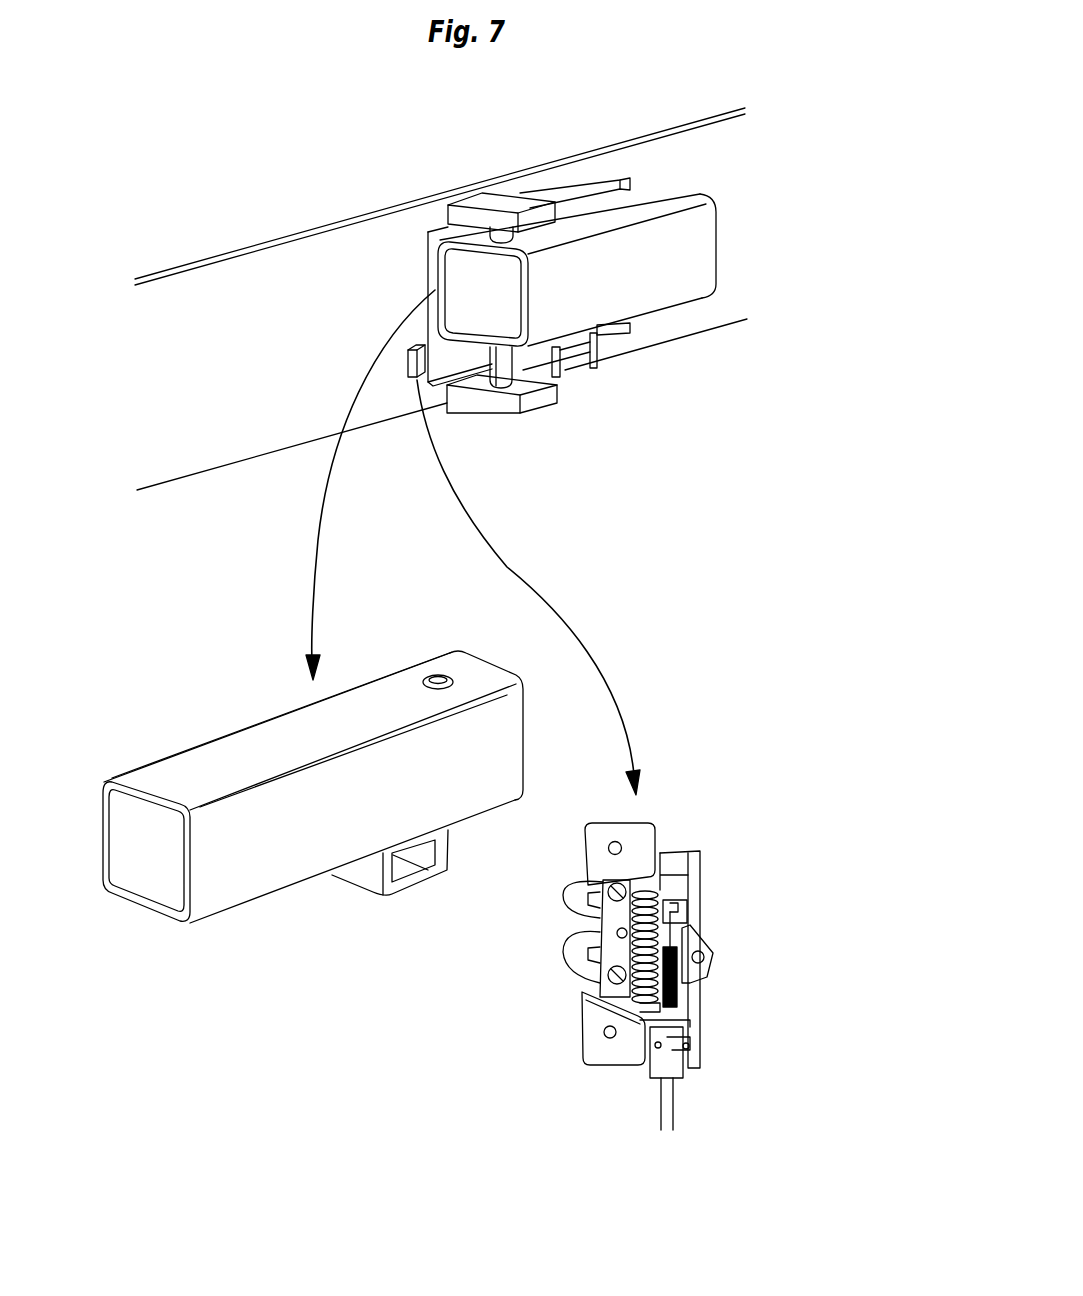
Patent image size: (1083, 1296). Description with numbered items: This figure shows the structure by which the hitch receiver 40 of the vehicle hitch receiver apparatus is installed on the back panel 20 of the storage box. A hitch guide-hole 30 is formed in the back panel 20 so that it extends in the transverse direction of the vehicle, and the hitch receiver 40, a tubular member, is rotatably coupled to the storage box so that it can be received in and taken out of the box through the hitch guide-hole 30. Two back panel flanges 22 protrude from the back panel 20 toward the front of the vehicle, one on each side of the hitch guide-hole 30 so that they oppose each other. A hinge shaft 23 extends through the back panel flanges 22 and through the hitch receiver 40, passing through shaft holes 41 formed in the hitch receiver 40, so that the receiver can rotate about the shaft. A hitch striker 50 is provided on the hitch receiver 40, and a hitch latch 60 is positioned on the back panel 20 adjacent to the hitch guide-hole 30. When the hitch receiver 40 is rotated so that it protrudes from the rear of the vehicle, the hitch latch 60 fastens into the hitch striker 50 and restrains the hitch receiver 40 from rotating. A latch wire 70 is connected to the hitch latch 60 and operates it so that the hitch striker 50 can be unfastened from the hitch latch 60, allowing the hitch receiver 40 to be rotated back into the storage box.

The back panel 20 is at (218, 445).
The back panel flanges 22 is at (500, 202).
The hinge shaft 23 is at (504, 366).
The hitch guide-hole 30 is at (595, 190).
The hitch receiver 40 is at (683, 284).
The shaft holes 41 is at (437, 670).
The hitch striker 50 is at (558, 358).
The hitch latch 60 is at (408, 368).
The latch wire 70 is at (674, 1108).